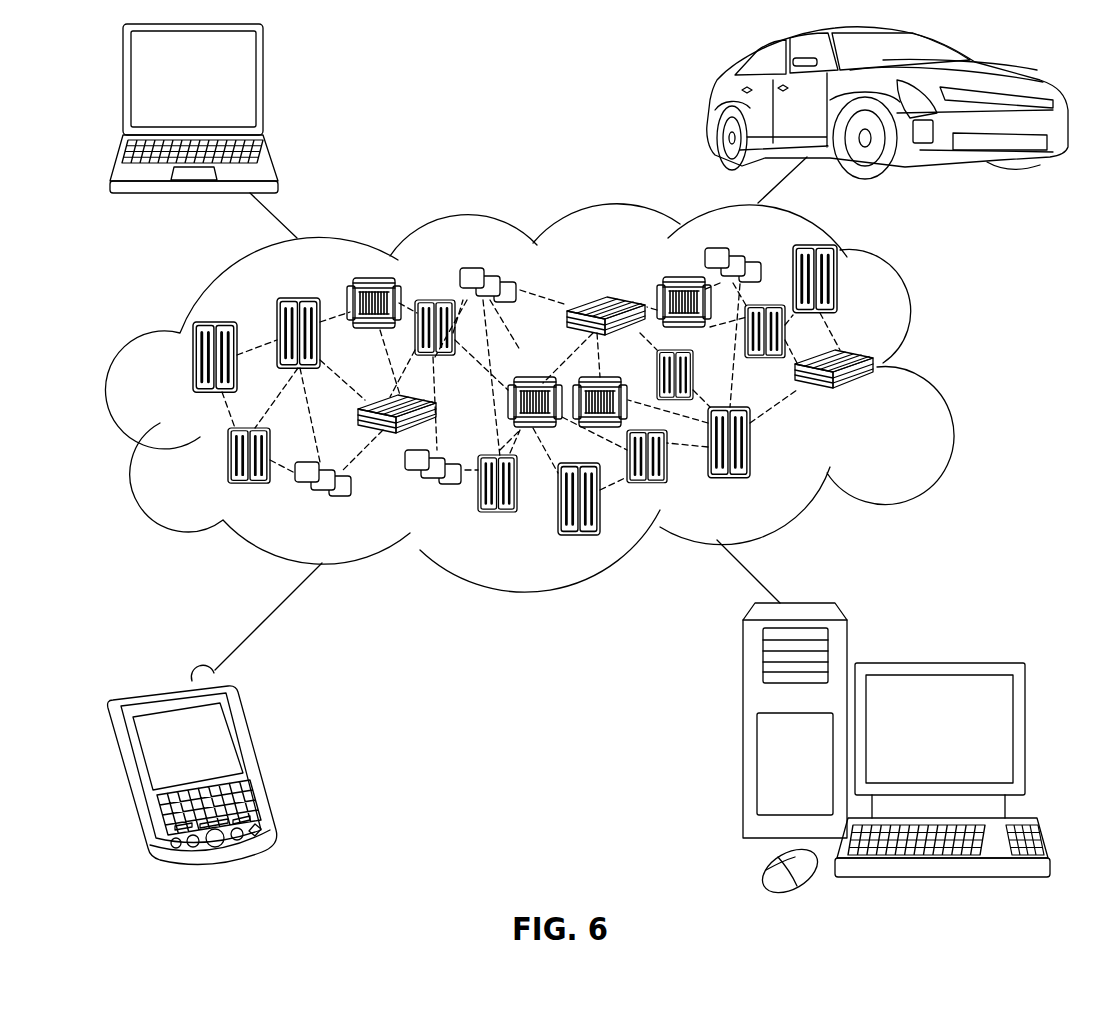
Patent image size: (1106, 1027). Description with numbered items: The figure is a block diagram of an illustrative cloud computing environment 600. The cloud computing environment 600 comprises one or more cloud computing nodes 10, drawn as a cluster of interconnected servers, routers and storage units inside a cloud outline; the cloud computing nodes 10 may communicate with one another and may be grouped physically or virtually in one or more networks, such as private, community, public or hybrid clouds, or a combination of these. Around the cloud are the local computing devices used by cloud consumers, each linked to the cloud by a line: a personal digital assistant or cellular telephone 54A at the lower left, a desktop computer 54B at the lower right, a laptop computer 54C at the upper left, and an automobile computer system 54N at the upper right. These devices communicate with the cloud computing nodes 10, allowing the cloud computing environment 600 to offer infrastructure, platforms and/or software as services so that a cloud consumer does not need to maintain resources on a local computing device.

The laptop computer 54C is at (265, 91).
The automobile computer system 54N is at (713, 107).
The personal digital assistant (PDA) or cellular telephone 54A is at (253, 760).
The desktop computer 54B is at (935, 663).
The cloud computing environment 600 is at (559, 398).
The cloud computing node 10 is at (878, 398).